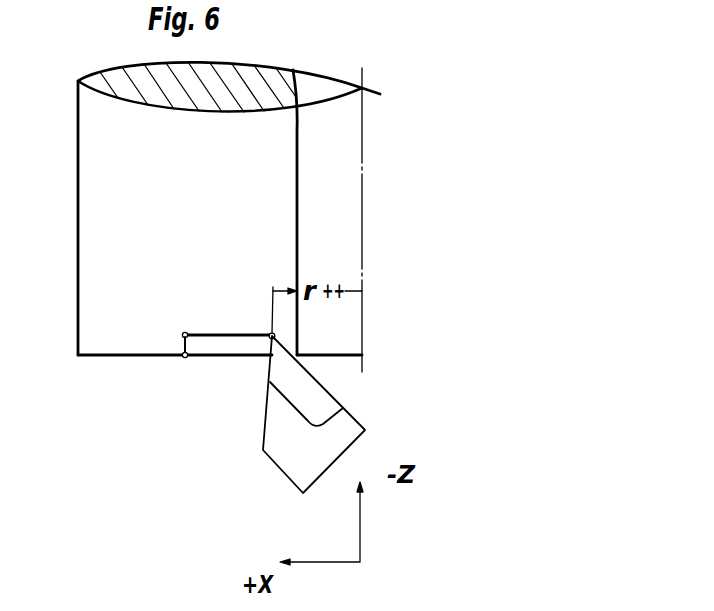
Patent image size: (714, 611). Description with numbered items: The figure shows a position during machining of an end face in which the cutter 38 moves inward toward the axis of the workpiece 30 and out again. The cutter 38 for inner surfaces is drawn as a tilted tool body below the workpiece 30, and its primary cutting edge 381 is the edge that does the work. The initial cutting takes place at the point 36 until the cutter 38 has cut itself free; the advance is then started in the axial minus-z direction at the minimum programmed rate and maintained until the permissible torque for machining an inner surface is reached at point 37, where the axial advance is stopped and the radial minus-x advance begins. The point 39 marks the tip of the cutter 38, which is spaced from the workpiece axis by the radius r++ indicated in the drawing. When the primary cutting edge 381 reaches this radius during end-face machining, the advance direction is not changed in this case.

The workpiece 30 is at (88, 215).
The point 36 is at (184, 358).
The point 37 is at (184, 332).
The cutter 38 is at (350, 428).
The primary cutting edge 381 is at (265, 407).
The tool tip reference point 39 is at (270, 333).